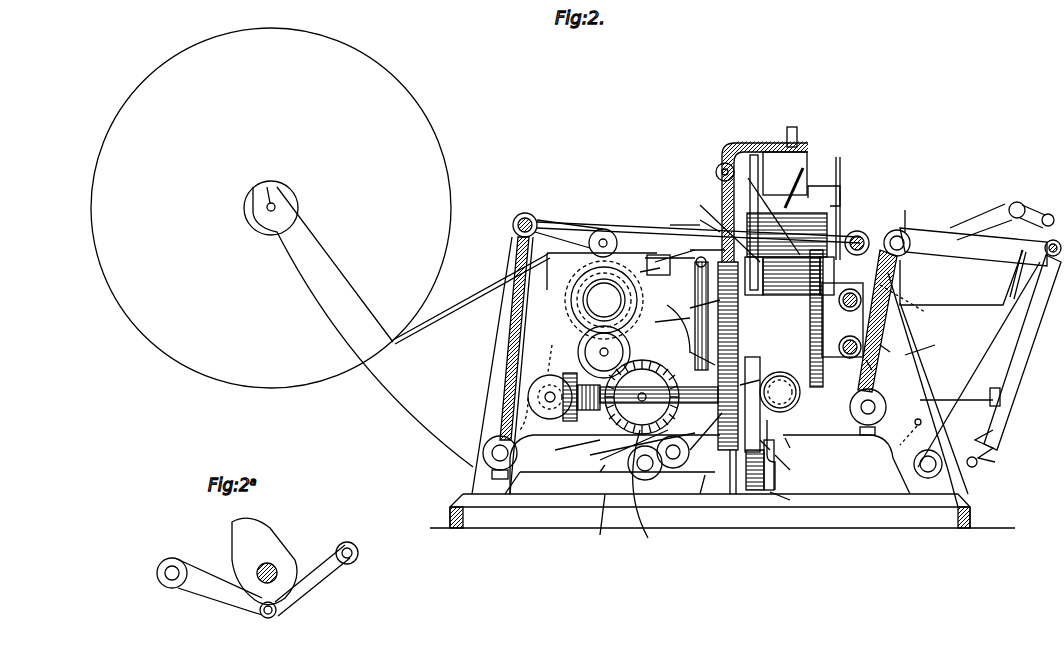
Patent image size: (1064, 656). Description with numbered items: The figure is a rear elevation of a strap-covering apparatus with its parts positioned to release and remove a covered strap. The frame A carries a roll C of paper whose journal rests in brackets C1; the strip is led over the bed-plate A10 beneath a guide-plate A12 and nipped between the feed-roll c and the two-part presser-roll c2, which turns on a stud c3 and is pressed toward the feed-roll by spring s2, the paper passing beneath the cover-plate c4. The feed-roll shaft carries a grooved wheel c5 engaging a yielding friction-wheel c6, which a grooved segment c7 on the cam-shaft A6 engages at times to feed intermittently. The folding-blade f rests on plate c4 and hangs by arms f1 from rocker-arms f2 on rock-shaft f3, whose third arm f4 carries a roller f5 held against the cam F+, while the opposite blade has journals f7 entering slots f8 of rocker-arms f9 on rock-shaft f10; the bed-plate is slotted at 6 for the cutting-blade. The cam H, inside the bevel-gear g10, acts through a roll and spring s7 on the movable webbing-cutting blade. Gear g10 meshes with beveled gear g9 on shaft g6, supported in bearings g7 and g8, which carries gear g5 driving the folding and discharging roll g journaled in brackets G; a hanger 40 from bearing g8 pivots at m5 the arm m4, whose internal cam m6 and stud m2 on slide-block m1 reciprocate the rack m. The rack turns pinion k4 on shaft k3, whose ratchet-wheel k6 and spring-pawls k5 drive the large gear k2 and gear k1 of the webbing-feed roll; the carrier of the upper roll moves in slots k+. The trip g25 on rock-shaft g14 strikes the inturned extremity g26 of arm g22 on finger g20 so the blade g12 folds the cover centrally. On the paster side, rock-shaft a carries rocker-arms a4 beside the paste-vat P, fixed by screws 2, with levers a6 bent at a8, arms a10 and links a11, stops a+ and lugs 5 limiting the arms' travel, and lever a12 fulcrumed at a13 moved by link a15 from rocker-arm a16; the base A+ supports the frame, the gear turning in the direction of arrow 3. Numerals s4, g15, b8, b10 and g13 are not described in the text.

In FIG. 2, the roll of paper C is at (124, 299).
In FIG. 2, the brackets C1 is at (322, 290).
In FIG. 2, the rocker-arms f2 is at (520, 309).
In FIG. 2, the frame A is at (470, 480).
In FIG. 2, the guide-plate A12 is at (553, 253).
In FIG. 2, the spring end s2 is at (567, 235).
In FIG. 2, the bar s4 is at (657, 223).
In FIG. 2, the presser-roll c2 is at (612, 236).
In FIG. 2, the bed-plate A10 is at (647, 260).
In FIG. 2, the large gear k2 is at (707, 207).
In FIG. 2, the arms f1 is at (685, 213).
In FIG. 2, the rock-shaft g14 is at (709, 219).
In FIG. 2, the folding-blade f is at (704, 245).
In FIG. 2, the stud c3 is at (642, 256).
In FIG. 2, the feed-roll c is at (580, 272).
In FIG. 2, the grooved wheel c5 is at (571, 294).
In FIG. 2, the cover-plate c4 is at (650, 275).
In FIG. 2, the spring s7 is at (695, 290).
In FIG. 2, the friction-wheel c6 is at (578, 352).
In FIG. 2, the spring-pawls k5 is at (545, 350).
In FIG. 2, the bearing g7 is at (527, 392).
In FIG. 2, the grooved segment c7 is at (582, 385).
In FIG. 2, the shaft g6 is at (523, 398).
In FIG. 2, the cam H is at (659, 385).
In FIG. 2A, the cam H is at (260, 538).
In FIG. 2, the cam-shaft A6 is at (636, 387).
In FIG. 2A, the cam-shaft A6 is at (276, 565).
In FIG. 2, the arm g15 is at (665, 319).
In FIG. 2, the slide-block m1 is at (694, 306).
In FIG. 2, the shaft k3 is at (678, 329).
In FIG. 2, the bevel-gear g10 is at (690, 350).
In FIG. 2, the gear g5 is at (735, 455).
In FIG. 2, the arm m4 is at (760, 490).
In FIG. 2, the folding and discharging roll g is at (789, 264).
In FIG. 2, the rack m is at (769, 394).
In FIG. 2, the gear k1 is at (868, 212).
In FIG. 2, the brackets G is at (836, 318).
In FIG. 2, the stud m2 is at (747, 377).
In FIG. 2, the internal cam m6 is at (763, 452).
In FIG. 2, the bearing g8 is at (795, 452).
In FIG. 2, the hanger 40 is at (790, 468).
In FIG. 2, the pivot m5 is at (791, 499).
In FIG. 2, the ratchet-wheel k6 is at (709, 418).
In FIG. 2A, the ratchet-wheel k6 is at (216, 599).
In FIG. 2, the lever b8 is at (706, 431).
In FIG. 2, the beveled gear g9 is at (568, 451).
In FIG. 2, the pinion k4 is at (684, 454).
In FIG. 2A, the pinion k4 is at (316, 579).
In FIG. 2, the rod b10 is at (707, 486).
In FIG. 2, the roller stud f5 is at (647, 480).
In FIG. 2, the third arm f4 is at (597, 479).
In FIG. 2, the rock-shaft f3 is at (505, 470).
In FIG. 2, the rock-shaft f10 is at (850, 405).
In FIG. 2, the journals f7 is at (900, 258).
In FIG. 2, the slots f8 is at (895, 230).
In FIG. 2, the paster bend a8 is at (906, 215).
In FIG. 2, the levers a6 is at (972, 248).
In FIG. 2, the paste-vat P is at (961, 288).
In FIG. 2, the link a11 is at (1015, 275).
In FIG. 2, the fulcrum a13 is at (1019, 202).
In FIG. 2, the lever a12 is at (983, 215).
In FIG. 2, the link a15 is at (1039, 205).
In FIG. 2, the rock-shaft a is at (1054, 258).
In FIG. 2, the rocker-arms a4 is at (1015, 330).
In FIG. 2, the arm a10 is at (999, 444).
In FIG. 2, the rocker-arm a16 is at (981, 468).
In FIG. 2, the rocker-arms f9 is at (920, 340).
In FIG. 2, the lugs 5 is at (905, 436).
In FIG. 2, the screws 2 is at (905, 304).
In FIG. 2, the transverse slot 6 is at (827, 391).
In FIG. 2, the arrow 3 is at (870, 362).
In FIG. 2, the bracket g13 is at (722, 160).
In FIG. 2, the finger g20 is at (785, 193).
In FIG. 2, the blade g12 is at (800, 160).
In FIG. 2, the arm g22 is at (840, 185).
In FIG. 2, the inturned extremity g26 is at (845, 190).
In FIG. 2, the trip g25 is at (890, 200).